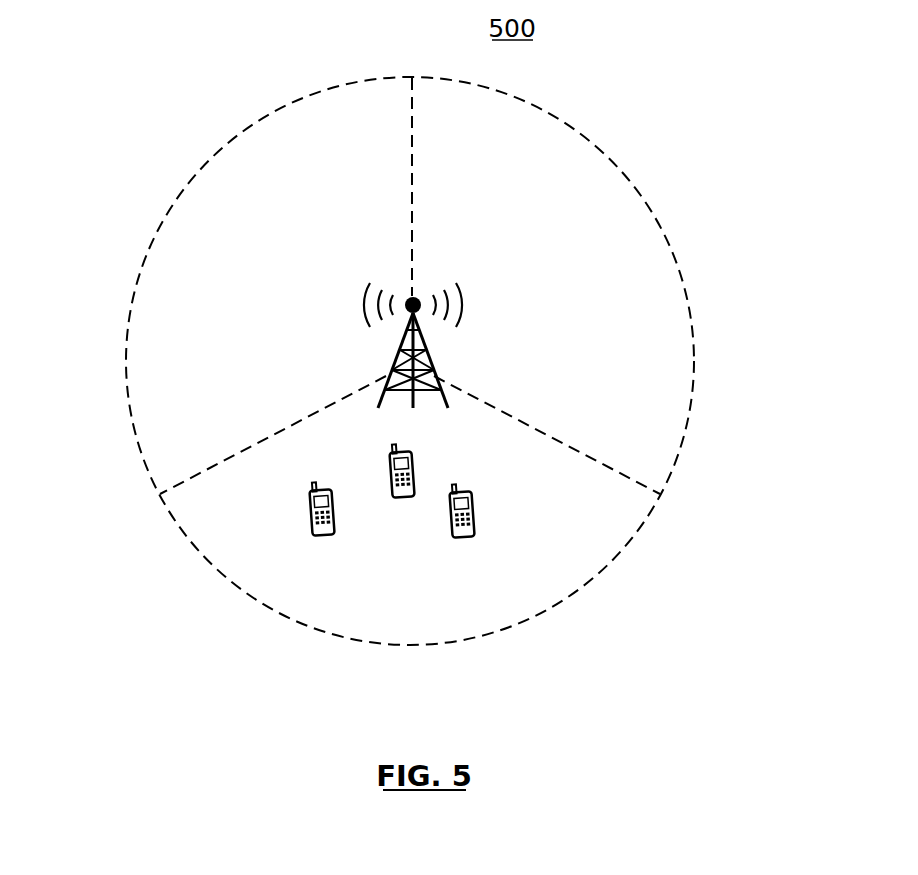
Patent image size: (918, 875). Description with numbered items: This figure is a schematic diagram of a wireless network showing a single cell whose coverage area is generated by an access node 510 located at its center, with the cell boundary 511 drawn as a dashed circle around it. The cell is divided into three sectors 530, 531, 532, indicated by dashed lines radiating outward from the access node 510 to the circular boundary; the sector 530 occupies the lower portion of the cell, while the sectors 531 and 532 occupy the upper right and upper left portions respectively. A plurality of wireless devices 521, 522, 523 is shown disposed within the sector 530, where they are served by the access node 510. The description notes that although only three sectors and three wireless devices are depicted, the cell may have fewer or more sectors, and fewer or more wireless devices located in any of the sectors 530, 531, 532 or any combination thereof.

The access node 510 is at (397, 364).
The cell coverage area 511 is at (249, 600).
The wireless device 521 is at (336, 518).
The wireless device 522 is at (474, 512).
The wireless device 523 is at (414, 476).
The sector 530 is at (578, 592).
The sector 531 is at (675, 248).
The sector 532 is at (168, 208).